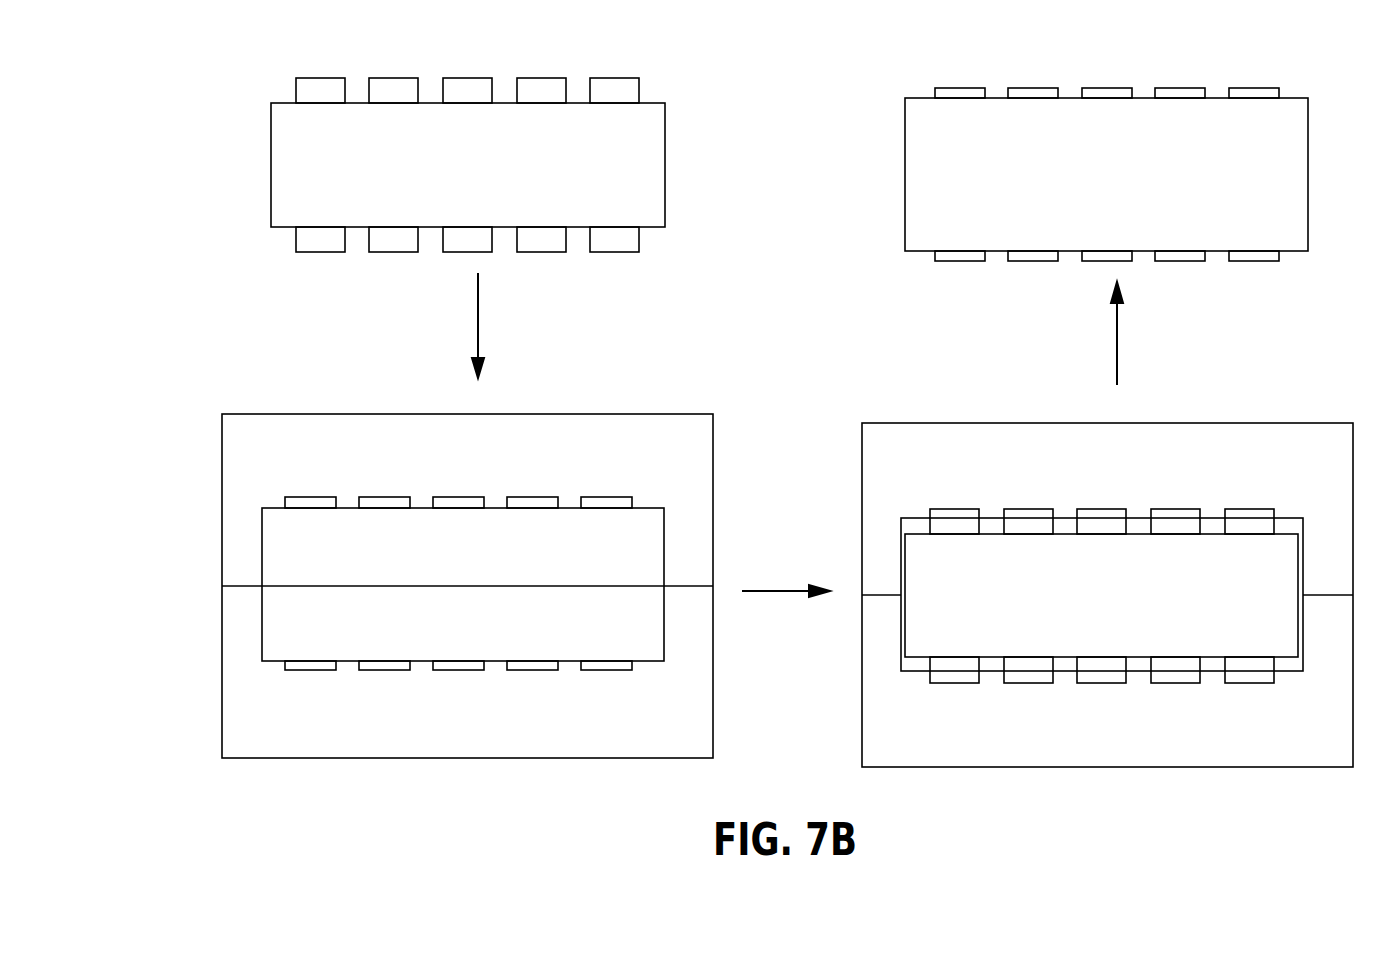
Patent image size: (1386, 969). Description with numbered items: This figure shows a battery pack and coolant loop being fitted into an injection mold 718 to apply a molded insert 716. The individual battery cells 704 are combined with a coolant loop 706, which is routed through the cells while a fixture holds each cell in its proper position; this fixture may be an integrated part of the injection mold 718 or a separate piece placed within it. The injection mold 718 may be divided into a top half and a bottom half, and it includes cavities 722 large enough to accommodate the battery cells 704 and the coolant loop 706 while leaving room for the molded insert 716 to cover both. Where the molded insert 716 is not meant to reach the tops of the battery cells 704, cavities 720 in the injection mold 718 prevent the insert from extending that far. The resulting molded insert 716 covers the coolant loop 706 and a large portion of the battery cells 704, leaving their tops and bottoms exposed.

The battery cells 704 is at (528, 78).
The coolant loop 706 is at (665, 103).
The molded insert 716 is at (905, 98).
The injection mold 718 is at (598, 414).
The cavities 720 is at (613, 497).
The cavities 722 is at (273, 508).